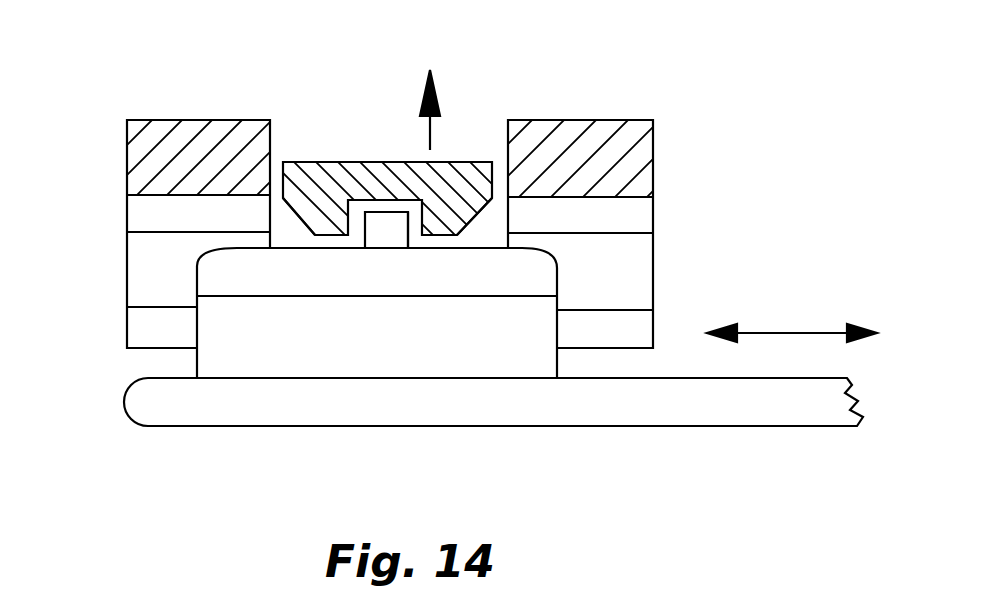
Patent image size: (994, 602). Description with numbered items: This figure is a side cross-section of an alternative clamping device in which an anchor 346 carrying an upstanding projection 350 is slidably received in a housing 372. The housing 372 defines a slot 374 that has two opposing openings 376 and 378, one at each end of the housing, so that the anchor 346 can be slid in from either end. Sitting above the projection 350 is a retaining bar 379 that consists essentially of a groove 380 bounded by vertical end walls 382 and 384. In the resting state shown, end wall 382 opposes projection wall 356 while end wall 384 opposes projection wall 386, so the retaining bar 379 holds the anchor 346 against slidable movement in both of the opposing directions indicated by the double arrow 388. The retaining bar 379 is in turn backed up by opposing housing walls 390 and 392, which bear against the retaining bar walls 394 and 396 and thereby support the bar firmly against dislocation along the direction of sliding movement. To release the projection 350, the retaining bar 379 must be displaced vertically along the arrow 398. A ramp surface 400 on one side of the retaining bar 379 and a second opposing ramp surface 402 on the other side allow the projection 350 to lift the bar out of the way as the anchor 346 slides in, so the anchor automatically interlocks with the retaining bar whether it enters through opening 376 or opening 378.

The anchor 346 is at (515, 340).
The projection 350 is at (377, 344).
The projection wall 356 is at (412, 252).
The housing 372 is at (683, 80).
The slot 374 is at (652, 243).
The opening 376 is at (630, 285).
The opening 378 is at (140, 265).
The retaining bar 379 is at (315, 172).
The groove 380 is at (377, 186).
The end wall 382 is at (432, 178).
The end wall 384 is at (342, 185).
The projection wall 386 is at (358, 240).
The double arrow 388 is at (791, 333).
The housing wall 390 is at (140, 123).
The housing wall 392 is at (593, 132).
The retaining bar wall 394 is at (497, 132).
The retaining bar wall 396 is at (278, 140).
The arrow 398 is at (430, 143).
The ramp surface 400 is at (460, 178).
The ramp surface 402 is at (300, 218).